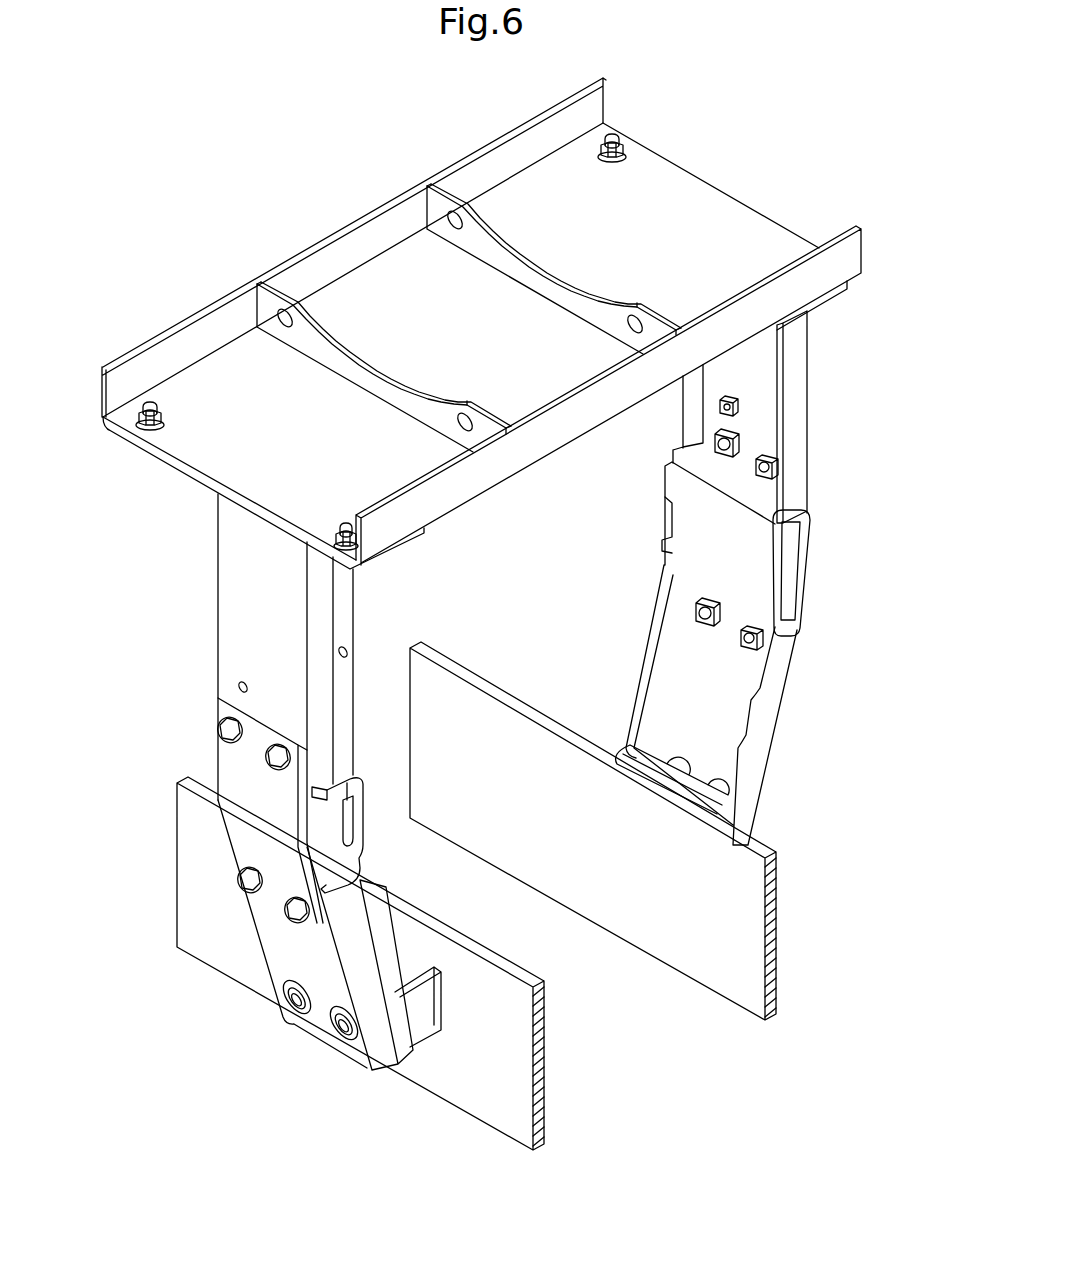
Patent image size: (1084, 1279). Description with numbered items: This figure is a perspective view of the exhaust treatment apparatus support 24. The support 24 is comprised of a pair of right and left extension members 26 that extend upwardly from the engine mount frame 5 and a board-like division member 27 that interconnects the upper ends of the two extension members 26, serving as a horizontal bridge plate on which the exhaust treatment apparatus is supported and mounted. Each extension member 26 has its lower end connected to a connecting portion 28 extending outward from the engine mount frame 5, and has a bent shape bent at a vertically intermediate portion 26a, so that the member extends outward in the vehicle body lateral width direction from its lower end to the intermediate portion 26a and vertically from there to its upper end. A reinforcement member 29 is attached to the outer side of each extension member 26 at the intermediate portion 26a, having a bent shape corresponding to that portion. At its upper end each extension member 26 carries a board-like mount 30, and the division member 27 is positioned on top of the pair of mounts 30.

The engine mount frame 5 is at (510, 1125).
The exhaust treatment apparatus support 24 is at (504, 574).
The extension member 26 is at (232, 618).
The intermediate portion 26a is at (365, 856).
The division member 27 is at (317, 270).
The connecting portion 28 is at (418, 1017).
The reinforcement member 29 is at (223, 773).
The mount 30 is at (162, 462).